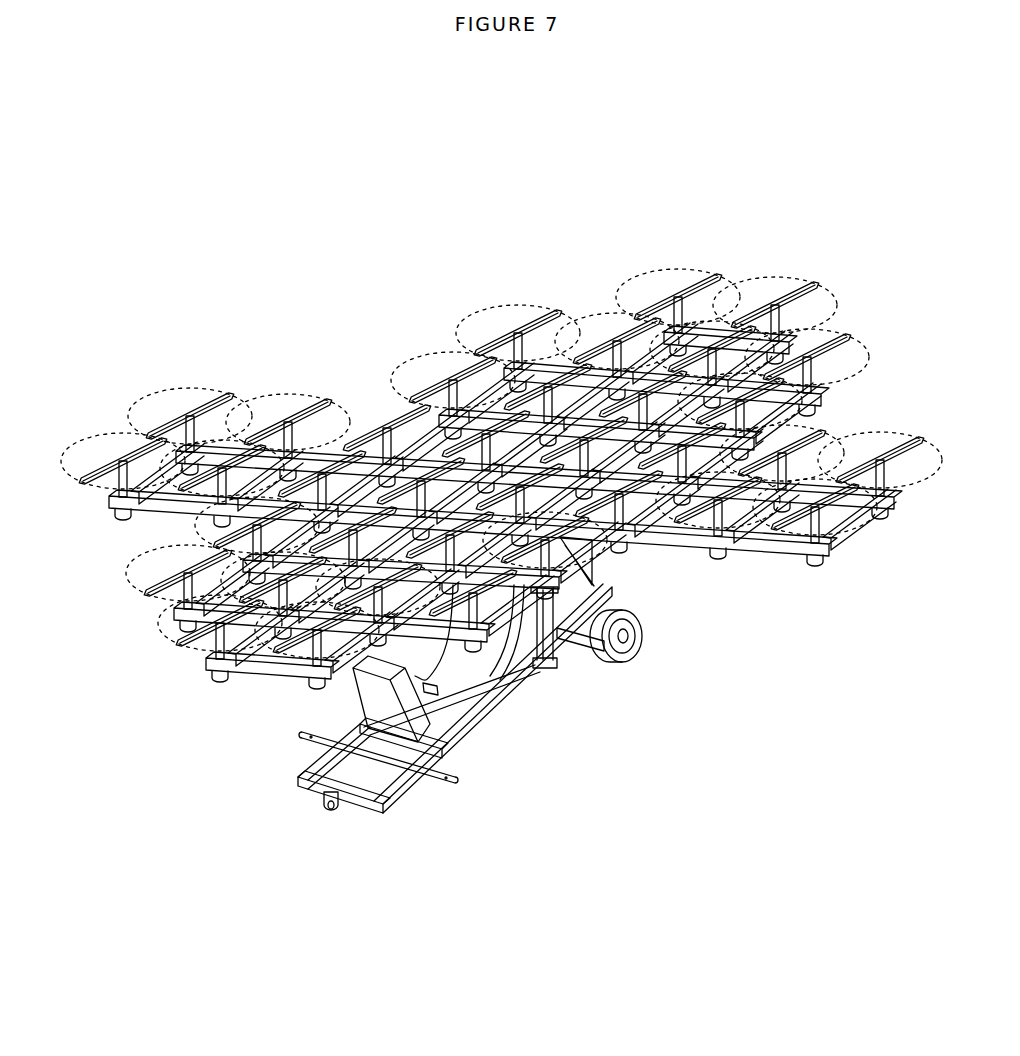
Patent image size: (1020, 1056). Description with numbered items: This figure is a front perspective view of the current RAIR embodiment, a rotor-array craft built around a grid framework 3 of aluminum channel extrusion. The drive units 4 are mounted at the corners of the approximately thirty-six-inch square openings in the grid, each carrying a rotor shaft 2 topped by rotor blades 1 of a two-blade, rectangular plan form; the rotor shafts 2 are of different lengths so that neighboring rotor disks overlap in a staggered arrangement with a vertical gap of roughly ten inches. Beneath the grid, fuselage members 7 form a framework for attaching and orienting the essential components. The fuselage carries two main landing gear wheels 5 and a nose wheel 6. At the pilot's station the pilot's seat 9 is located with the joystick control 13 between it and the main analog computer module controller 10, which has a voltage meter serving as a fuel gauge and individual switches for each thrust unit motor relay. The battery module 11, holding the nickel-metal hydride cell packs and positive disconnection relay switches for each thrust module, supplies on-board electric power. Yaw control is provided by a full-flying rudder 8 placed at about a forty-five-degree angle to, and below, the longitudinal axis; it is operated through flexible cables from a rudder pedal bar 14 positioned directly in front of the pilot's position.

The rotor blades 1 is at (316, 402).
The rotor shafts 2 is at (822, 522).
The framework 3 is at (737, 547).
The drive units 4 is at (220, 677).
The main landing gear wheels 5 is at (613, 660).
The nose wheel 6 is at (330, 814).
The fuselage members 7 is at (530, 672).
The rudder 8 is at (600, 560).
The pilot's seat 9 is at (503, 684).
The main analog computer module controller 10 is at (380, 697).
The battery module 11 is at (550, 634).
The joystick control 13 is at (434, 696).
The rudder pedal bar 14 is at (437, 786).